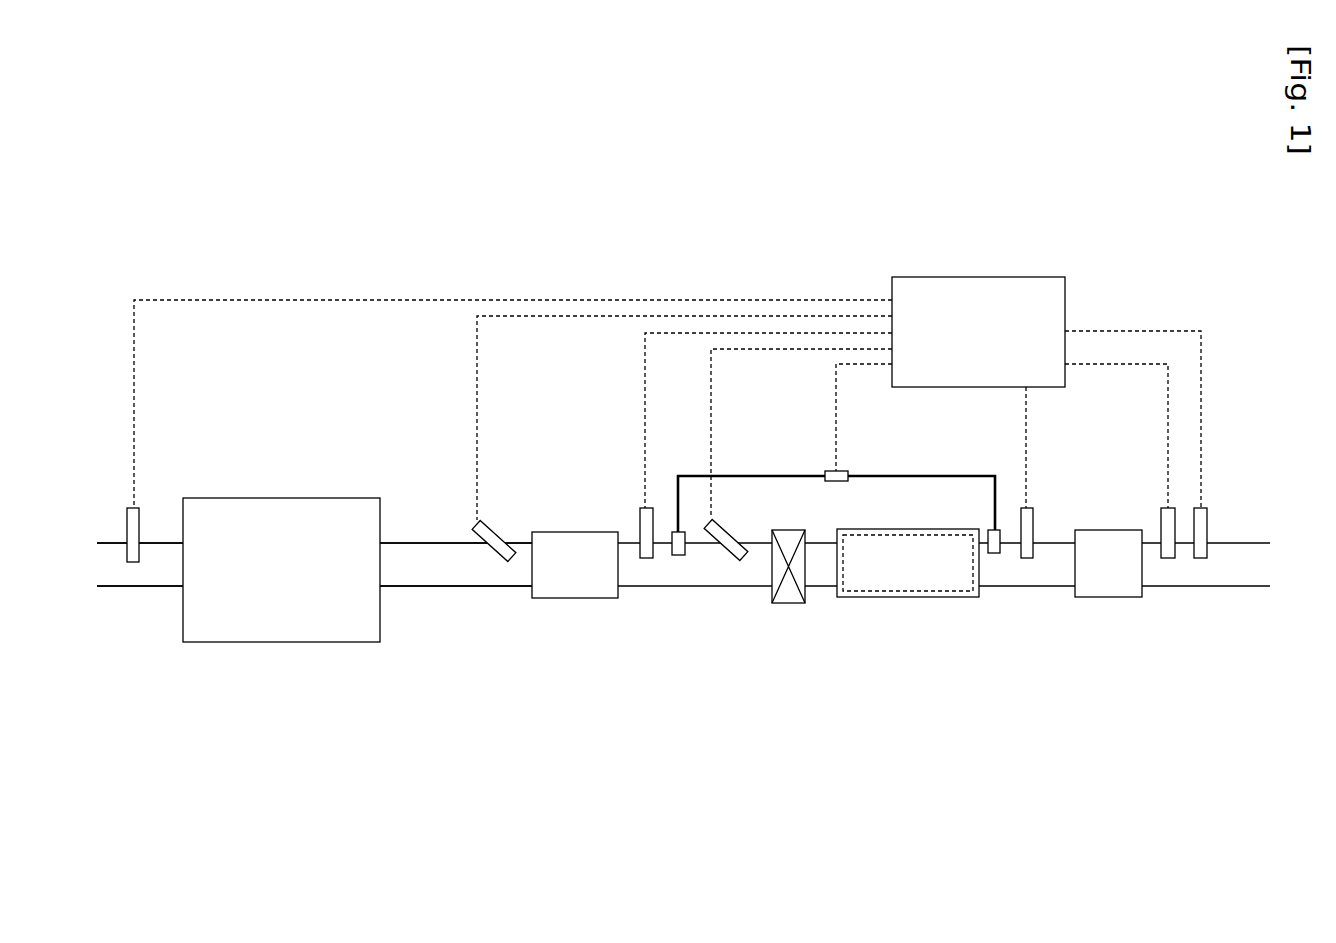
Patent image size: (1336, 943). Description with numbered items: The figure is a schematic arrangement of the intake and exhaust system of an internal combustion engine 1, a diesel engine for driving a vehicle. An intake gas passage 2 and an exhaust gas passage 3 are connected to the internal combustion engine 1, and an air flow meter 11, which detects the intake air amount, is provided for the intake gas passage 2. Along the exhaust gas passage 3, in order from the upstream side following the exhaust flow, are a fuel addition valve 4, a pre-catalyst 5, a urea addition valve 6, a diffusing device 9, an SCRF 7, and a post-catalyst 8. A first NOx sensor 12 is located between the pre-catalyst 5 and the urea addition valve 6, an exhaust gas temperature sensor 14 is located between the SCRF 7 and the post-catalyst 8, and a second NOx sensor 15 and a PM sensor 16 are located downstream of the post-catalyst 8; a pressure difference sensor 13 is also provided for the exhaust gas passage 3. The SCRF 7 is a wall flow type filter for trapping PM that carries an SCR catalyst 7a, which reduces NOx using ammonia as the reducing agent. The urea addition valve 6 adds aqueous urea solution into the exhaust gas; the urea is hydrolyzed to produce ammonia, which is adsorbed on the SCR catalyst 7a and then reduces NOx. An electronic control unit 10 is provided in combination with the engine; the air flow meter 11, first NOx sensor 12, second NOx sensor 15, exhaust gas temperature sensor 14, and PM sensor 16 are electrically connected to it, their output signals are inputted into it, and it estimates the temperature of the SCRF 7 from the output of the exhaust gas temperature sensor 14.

The internal combustion engine 1 is at (282, 497).
The intake gas passage 2 is at (144, 590).
The exhaust gas passage 3 is at (465, 588).
The fuel addition valve 4 is at (495, 522).
The pre-catalyst 5 is at (573, 598).
The urea addition valve 6 is at (723, 518).
The SCRF 7 is at (885, 599).
The SCR catalyst 7a is at (930, 597).
The post-catalyst 8 is at (1107, 599).
The diffusing device 9 is at (790, 605).
The electronic control unit 10 is at (1065, 312).
The air flow meter 11 is at (140, 522).
The first NOx sensor 12 is at (635, 518).
The pressure difference sensor 13 is at (838, 469).
The exhaust gas temperature sensor 14 is at (1035, 520).
The second NOx sensor 15 is at (1161, 520).
The PM sensor 16 is at (1208, 520).